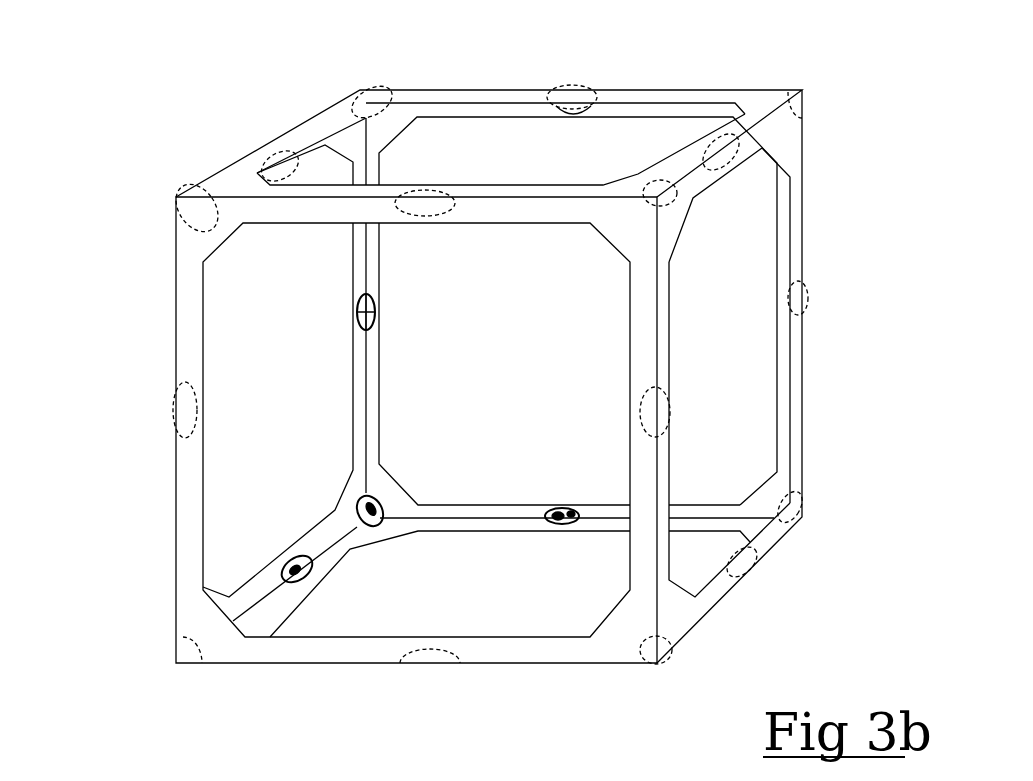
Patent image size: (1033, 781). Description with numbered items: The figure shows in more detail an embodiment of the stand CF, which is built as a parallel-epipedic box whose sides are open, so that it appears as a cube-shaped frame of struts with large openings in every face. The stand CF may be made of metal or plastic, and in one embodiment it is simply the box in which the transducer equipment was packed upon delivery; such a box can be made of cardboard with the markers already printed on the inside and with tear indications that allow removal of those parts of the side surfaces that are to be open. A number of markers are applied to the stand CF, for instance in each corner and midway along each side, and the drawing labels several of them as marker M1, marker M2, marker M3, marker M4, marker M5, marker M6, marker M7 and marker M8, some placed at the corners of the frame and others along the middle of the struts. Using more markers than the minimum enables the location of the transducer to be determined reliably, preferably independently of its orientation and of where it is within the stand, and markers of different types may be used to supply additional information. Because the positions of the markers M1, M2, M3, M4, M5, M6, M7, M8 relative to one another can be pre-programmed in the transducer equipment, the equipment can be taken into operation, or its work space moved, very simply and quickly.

The stand CF is at (185, 551).
The marker M1 is at (177, 211).
The marker M2 is at (360, 95).
The marker M3 is at (798, 96).
The marker M4 is at (651, 198).
The marker M5 is at (283, 160).
The marker M6 is at (574, 97).
The marker M7 is at (723, 156).
The marker M8 is at (428, 203).